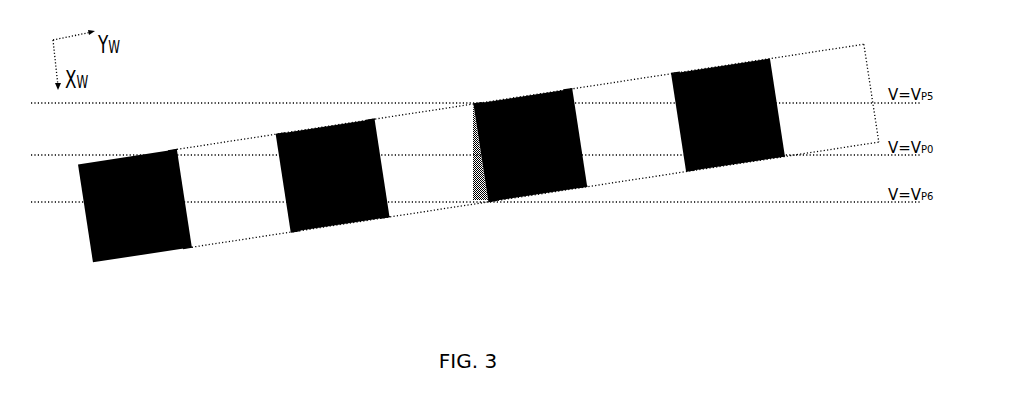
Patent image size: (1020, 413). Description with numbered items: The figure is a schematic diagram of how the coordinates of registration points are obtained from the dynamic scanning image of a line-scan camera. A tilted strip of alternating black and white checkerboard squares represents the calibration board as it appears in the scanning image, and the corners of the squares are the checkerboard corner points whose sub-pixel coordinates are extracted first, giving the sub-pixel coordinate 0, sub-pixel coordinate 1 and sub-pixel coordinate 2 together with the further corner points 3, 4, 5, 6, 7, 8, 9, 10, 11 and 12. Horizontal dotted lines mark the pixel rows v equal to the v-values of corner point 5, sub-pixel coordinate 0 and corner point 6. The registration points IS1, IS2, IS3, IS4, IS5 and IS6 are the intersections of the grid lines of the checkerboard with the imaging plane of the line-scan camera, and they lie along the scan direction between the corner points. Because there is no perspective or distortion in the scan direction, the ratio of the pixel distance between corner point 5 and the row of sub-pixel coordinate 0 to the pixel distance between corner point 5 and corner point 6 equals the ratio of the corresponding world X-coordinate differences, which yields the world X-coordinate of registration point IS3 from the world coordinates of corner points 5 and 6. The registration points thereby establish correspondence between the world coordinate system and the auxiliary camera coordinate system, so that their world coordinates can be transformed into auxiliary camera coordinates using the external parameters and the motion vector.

The sub-pixel coordinate 0 is at (784, 173).
The sub-pixel coordinate 1 is at (670, 58).
The sub-pixel coordinate 2 is at (688, 185).
The corner point 3 is at (570, 74).
The corner point 4 is at (588, 201).
The corner point 5 is at (474, 89).
The corner point 6 is at (491, 215).
The corner point 7 is at (371, 104).
The corner point 8 is at (388, 231).
The corner point 9 is at (276, 119).
The corner point 10 is at (295, 246).
The corner point 11 is at (177, 136).
The corner point 12 is at (197, 262).
The registration point IS1 is at (645, 128).
The registration point IS2 is at (575, 128).
The registration point IS3 is at (475, 128).
The registration point IS4 is at (377, 153).
The registration point IS5 is at (243, 153).
The registration point IS6 is at (176, 153).